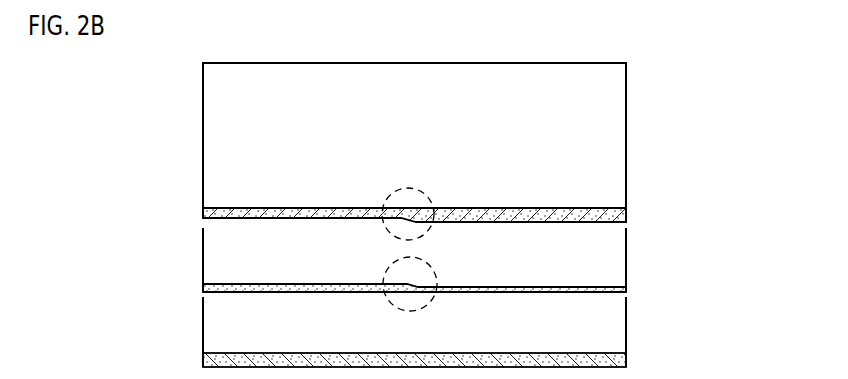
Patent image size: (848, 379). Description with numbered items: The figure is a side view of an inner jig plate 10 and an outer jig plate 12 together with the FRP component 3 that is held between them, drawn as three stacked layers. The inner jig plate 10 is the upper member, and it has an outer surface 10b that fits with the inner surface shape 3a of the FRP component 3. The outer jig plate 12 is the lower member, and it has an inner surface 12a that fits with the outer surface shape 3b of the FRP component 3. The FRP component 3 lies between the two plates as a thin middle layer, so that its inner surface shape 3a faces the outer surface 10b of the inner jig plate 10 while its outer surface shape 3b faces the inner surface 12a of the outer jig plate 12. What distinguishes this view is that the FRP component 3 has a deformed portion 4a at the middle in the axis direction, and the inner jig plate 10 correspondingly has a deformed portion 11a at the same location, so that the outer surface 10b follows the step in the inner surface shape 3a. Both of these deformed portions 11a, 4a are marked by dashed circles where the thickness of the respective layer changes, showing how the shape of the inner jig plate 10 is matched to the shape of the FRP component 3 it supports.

The inner jig plate 10 is at (633, 210).
The outer surface 10b is at (596, 222).
The deformed portion 11a is at (424, 193).
The FRP component 3 is at (200, 287).
The inner surface shape 3a is at (490, 287).
The outer surface shape 3b is at (492, 292).
The deformed portion 4a is at (392, 302).
The outer jig plate 12 is at (630, 356).
The inner surface 12a is at (217, 327).